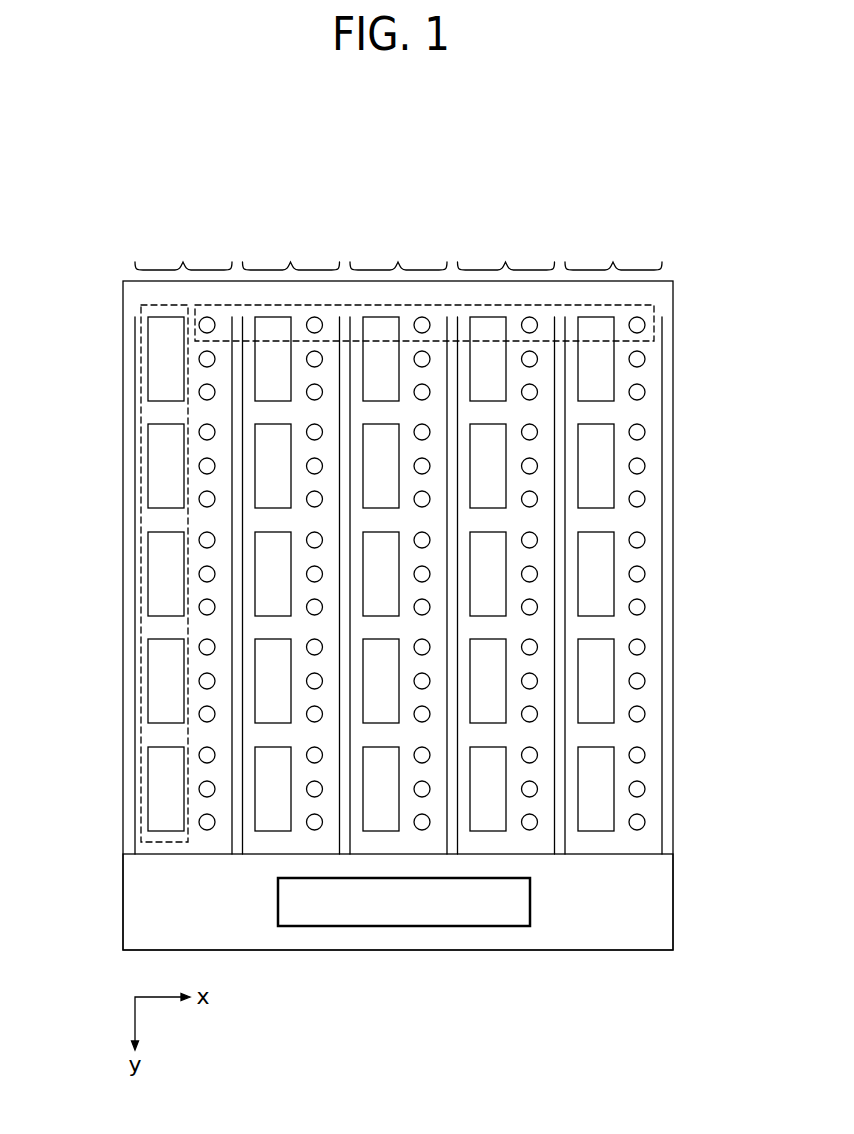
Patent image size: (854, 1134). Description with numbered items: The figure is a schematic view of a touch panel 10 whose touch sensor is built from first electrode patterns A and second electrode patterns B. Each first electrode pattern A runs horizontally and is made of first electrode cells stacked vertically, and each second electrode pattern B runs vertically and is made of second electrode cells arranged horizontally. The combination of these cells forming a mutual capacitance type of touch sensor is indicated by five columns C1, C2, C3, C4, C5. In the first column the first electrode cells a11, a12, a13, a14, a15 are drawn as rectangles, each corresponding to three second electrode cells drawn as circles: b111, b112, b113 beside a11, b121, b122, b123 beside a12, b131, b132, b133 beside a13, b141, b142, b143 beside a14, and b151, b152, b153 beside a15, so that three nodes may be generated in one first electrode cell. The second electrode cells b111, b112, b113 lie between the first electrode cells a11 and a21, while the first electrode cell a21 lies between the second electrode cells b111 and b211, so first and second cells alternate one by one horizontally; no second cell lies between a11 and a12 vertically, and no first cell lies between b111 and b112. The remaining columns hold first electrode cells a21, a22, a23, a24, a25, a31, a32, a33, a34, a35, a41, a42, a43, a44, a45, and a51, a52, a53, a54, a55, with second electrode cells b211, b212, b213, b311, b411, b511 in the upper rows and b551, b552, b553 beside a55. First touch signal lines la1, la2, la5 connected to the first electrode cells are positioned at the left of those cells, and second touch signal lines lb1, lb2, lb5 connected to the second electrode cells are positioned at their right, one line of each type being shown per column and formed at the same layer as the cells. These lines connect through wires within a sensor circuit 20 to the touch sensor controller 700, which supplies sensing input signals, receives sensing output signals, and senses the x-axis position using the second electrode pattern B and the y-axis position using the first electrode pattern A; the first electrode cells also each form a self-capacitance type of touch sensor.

The touch panel 10 is at (673, 457).
The sensor circuit 20 is at (673, 899).
The touch sensor controller 700 is at (531, 902).
The first electrode pattern A is at (161, 305).
The second electrode pattern B is at (654, 305).
The column C1 is at (183, 250).
The column C2 is at (291, 250).
The column C3 is at (398, 250).
The column C4 is at (506, 250).
The column C5 is at (613, 250).
The first touch signal line la1 is at (135, 333).
The first touch signal line la2 is at (243, 317).
The first touch signal line la5 is at (565, 411).
The second touch signal line lb1 is at (232, 317).
The second touch signal line lb2 is at (340, 330).
The second touch signal line lb5 is at (664, 362).
The first electrode cell a11 is at (166, 359).
The first electrode cell a12 is at (166, 466).
The first electrode cell a13 is at (166, 574).
The first electrode cell a14 is at (166, 681).
The first electrode cell a15 is at (166, 789).
The first electrode cell a21 is at (273, 359).
The first electrode cell a22 is at (273, 466).
The first electrode cell a23 is at (273, 574).
The first electrode cell a24 is at (273, 681).
The first electrode cell a25 is at (273, 789).
The first electrode cell a31 is at (381, 359).
The first electrode cell a32 is at (381, 466).
The first electrode cell a33 is at (381, 574).
The first electrode cell a34 is at (381, 681).
The first electrode cell a35 is at (381, 789).
The first electrode cell a41 is at (488, 359).
The first electrode cell a42 is at (488, 466).
The first electrode cell a43 is at (488, 574).
The first electrode cell a44 is at (488, 681).
The first electrode cell a45 is at (488, 789).
The first electrode cell a51 is at (596, 359).
The first electrode cell a52 is at (596, 466).
The first electrode cell a53 is at (596, 574).
The first electrode cell a54 is at (596, 681).
The first electrode cell a55 is at (596, 789).
The second electrode cell b111 is at (207, 317).
The second electrode cell b112 is at (199, 359).
The second electrode cell b113 is at (199, 392).
The second electrode cell b121 is at (199, 432).
The second electrode cell b122 is at (199, 466).
The second electrode cell b123 is at (199, 499).
The second electrode cell b131 is at (199, 540).
The second electrode cell b132 is at (199, 574).
The second electrode cell b133 is at (199, 607).
The second electrode cell b141 is at (199, 647).
The second electrode cell b142 is at (199, 681).
The second electrode cell b143 is at (199, 714).
The second electrode cell b151 is at (199, 755).
The second electrode cell b152 is at (199, 789).
The second electrode cell b153 is at (199, 822).
The second electrode cell b211 is at (314, 317).
The second electrode cell b212 is at (322, 359).
The second electrode cell b213 is at (322, 392).
The second electrode cell b311 is at (422, 317).
The second electrode cell b411 is at (530, 317).
The second electrode cell b511 is at (645, 326).
The second electrode cell b551 is at (645, 755).
The second electrode cell b552 is at (645, 789).
The second electrode cell b553 is at (645, 822).